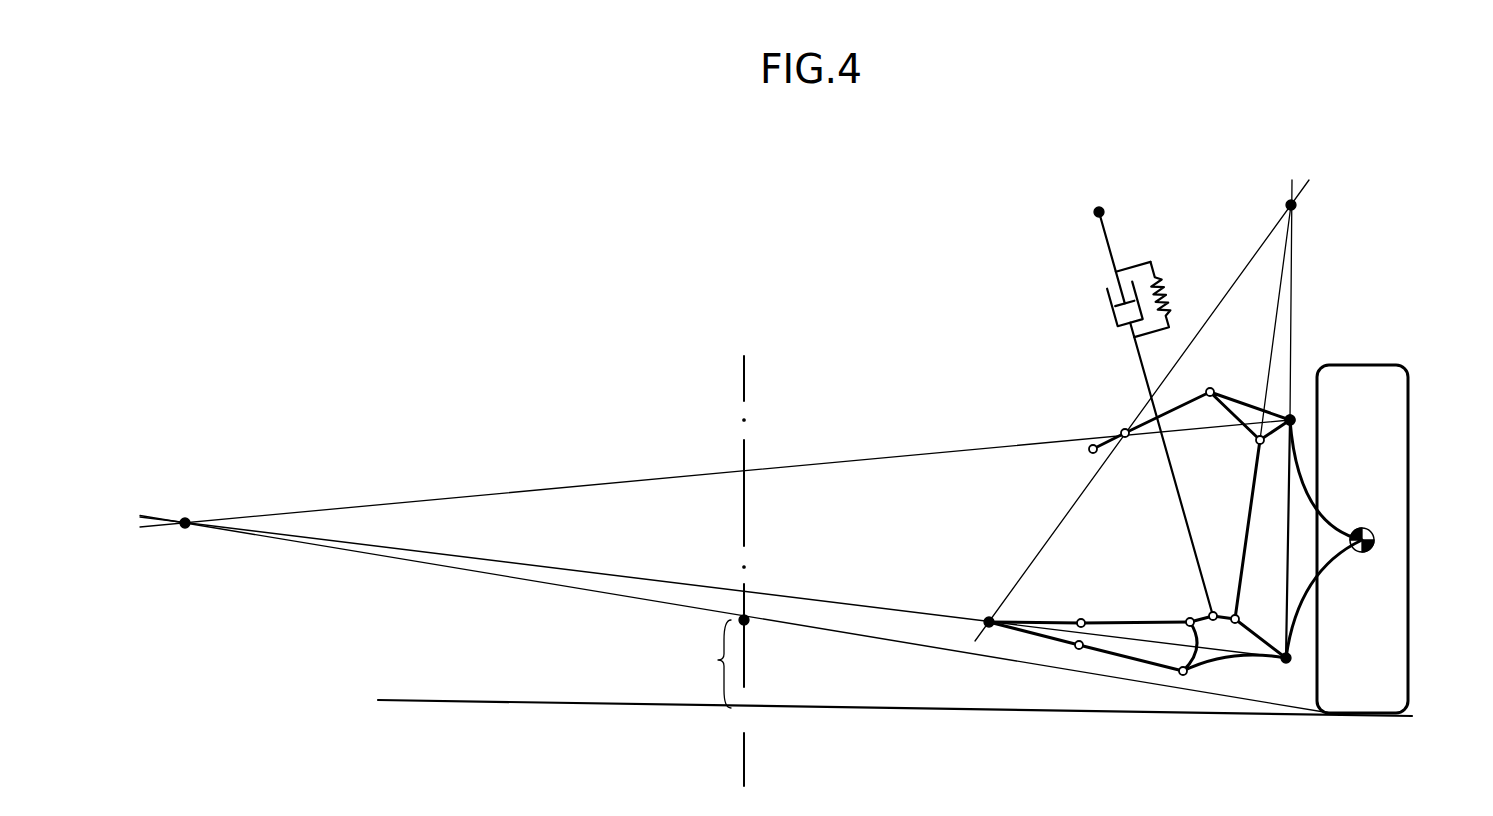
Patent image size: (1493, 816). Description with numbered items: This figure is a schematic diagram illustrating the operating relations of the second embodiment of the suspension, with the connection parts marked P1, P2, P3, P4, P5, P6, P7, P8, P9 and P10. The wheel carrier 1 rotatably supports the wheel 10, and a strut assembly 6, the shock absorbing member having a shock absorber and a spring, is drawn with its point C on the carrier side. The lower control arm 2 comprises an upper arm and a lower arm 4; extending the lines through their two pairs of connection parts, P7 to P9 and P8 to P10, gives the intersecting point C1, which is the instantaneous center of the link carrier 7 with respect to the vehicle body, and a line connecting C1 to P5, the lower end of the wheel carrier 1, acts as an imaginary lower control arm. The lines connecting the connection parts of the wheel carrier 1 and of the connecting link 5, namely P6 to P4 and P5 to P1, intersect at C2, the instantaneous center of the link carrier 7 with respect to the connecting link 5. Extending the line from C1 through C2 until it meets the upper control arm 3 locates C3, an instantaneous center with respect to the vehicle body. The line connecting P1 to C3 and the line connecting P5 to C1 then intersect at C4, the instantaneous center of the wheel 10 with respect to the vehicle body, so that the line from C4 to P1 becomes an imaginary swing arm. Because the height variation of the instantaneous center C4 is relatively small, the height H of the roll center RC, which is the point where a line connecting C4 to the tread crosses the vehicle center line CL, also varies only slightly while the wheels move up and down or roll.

The wheel carrier 1 is at (1289, 553).
The lower control arm 2 is at (1247, 410).
The upper control arm 3 is at (1187, 402).
The lower arm 4 is at (1137, 662).
The connecting link 5 is at (1245, 592).
The strut assembly 6 is at (1109, 245).
The link carrier 7 is at (1226, 644).
The wheel 10 is at (1393, 421).
The wheel center C is at (1373, 543).
The instantaneous center of the link carrier with respect to the vehicle body C1 is at (987, 620).
The instantaneous center of the link carrier with respect to the connecting link C2 is at (1291, 205).
The instantaneous center with respect to the vehicle body C3 is at (1122, 430).
The instantaneous center of the wheel with respect to the vehicle body C4 is at (185, 520).
The connection part P1 is at (1293, 417).
The connection part P2 is at (1216, 385).
The connection part P3 is at (1090, 451).
The connection part P4 is at (1257, 443).
The connection part P5 is at (1287, 662).
The connection part P6 is at (1233, 615).
The connection part P7 is at (1188, 618).
The connection part P8 is at (1183, 677).
The connection part P9 is at (1081, 619).
The connection part P10 is at (1076, 648).
The center line CL is at (745, 555).
The height of roll center H is at (714, 664).
The roll center RC is at (746, 623).